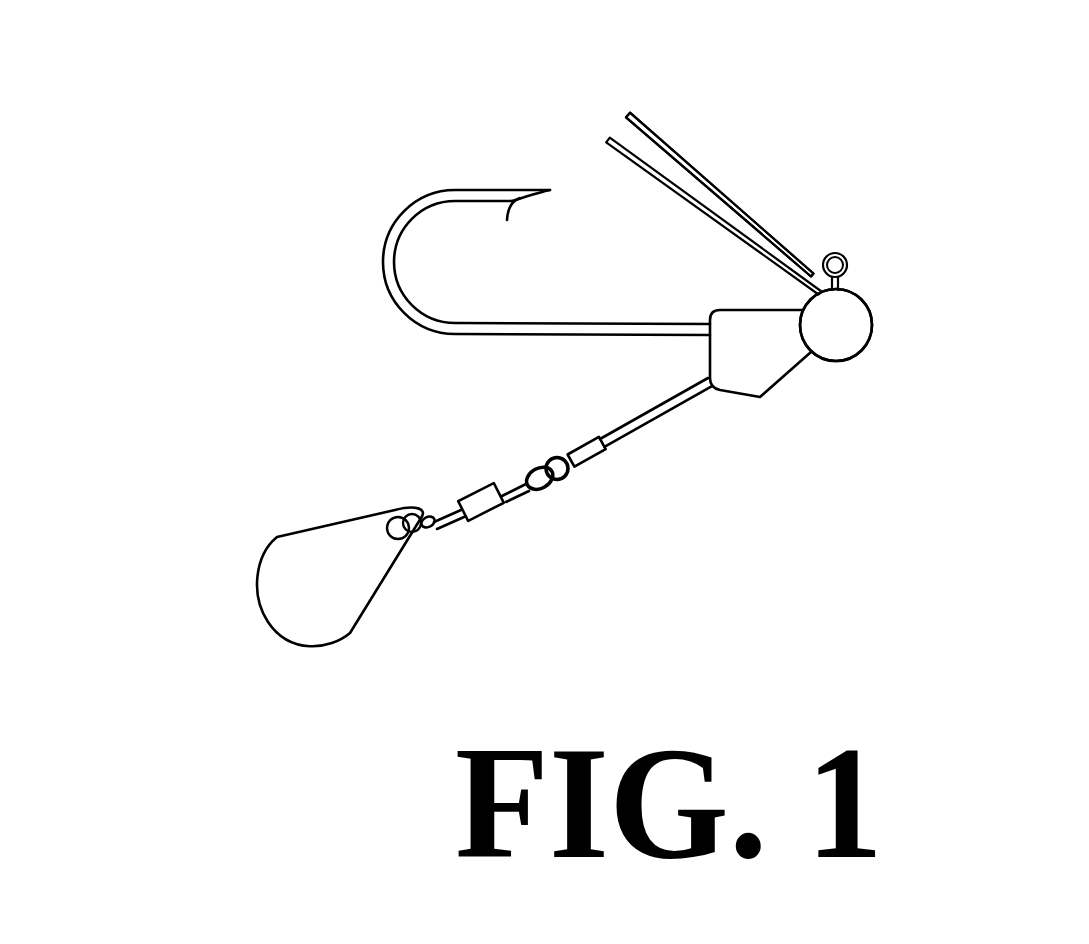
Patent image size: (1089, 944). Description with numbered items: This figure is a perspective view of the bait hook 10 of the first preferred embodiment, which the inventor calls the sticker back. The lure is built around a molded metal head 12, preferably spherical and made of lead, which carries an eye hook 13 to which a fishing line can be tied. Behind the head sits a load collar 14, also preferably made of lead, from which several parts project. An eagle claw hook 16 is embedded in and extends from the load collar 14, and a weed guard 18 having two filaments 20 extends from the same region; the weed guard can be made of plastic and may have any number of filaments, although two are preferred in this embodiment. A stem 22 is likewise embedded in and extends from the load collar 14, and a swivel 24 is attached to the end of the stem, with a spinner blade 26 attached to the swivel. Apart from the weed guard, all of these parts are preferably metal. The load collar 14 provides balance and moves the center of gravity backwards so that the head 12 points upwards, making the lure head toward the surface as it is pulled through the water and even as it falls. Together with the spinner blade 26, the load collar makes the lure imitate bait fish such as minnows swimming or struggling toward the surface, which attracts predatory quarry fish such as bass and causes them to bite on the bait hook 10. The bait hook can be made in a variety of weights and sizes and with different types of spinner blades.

The bait hook 10 is at (872, 323).
The molded metal head 12 is at (860, 353).
The eye hook 13 is at (844, 256).
The load collar 14 is at (783, 382).
The eagle claw hook 16 is at (383, 265).
The weed guard 18 is at (787, 247).
The filaments 20 is at (628, 115).
The stem 22 is at (657, 418).
The swivel 24 is at (488, 508).
The spinner blade 26 is at (266, 545).